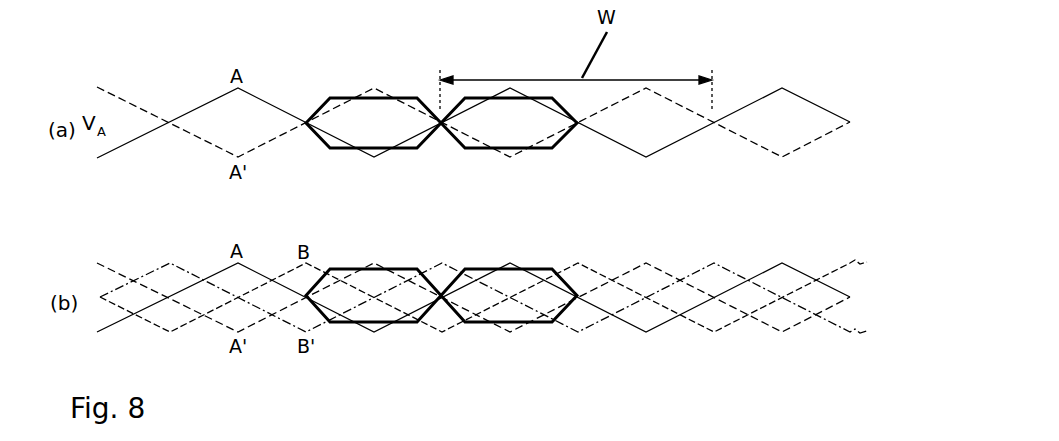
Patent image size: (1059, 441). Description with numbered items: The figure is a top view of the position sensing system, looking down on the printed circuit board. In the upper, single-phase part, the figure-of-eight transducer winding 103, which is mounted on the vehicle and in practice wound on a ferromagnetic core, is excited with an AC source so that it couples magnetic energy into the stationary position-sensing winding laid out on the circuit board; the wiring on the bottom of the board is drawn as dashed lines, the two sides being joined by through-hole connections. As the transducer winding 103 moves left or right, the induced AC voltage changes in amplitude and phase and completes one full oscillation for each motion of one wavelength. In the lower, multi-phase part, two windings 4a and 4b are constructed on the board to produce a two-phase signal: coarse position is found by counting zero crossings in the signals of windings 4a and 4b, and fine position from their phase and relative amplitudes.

In FIG. 8A, the transducer winding 103 is at (337, 98).
In FIG. 8B, the transducer winding 103 is at (310, 290).
In FIG. 8B, the winding 4a is at (147, 287).
In FIG. 8B, the winding 4b is at (250, 288).